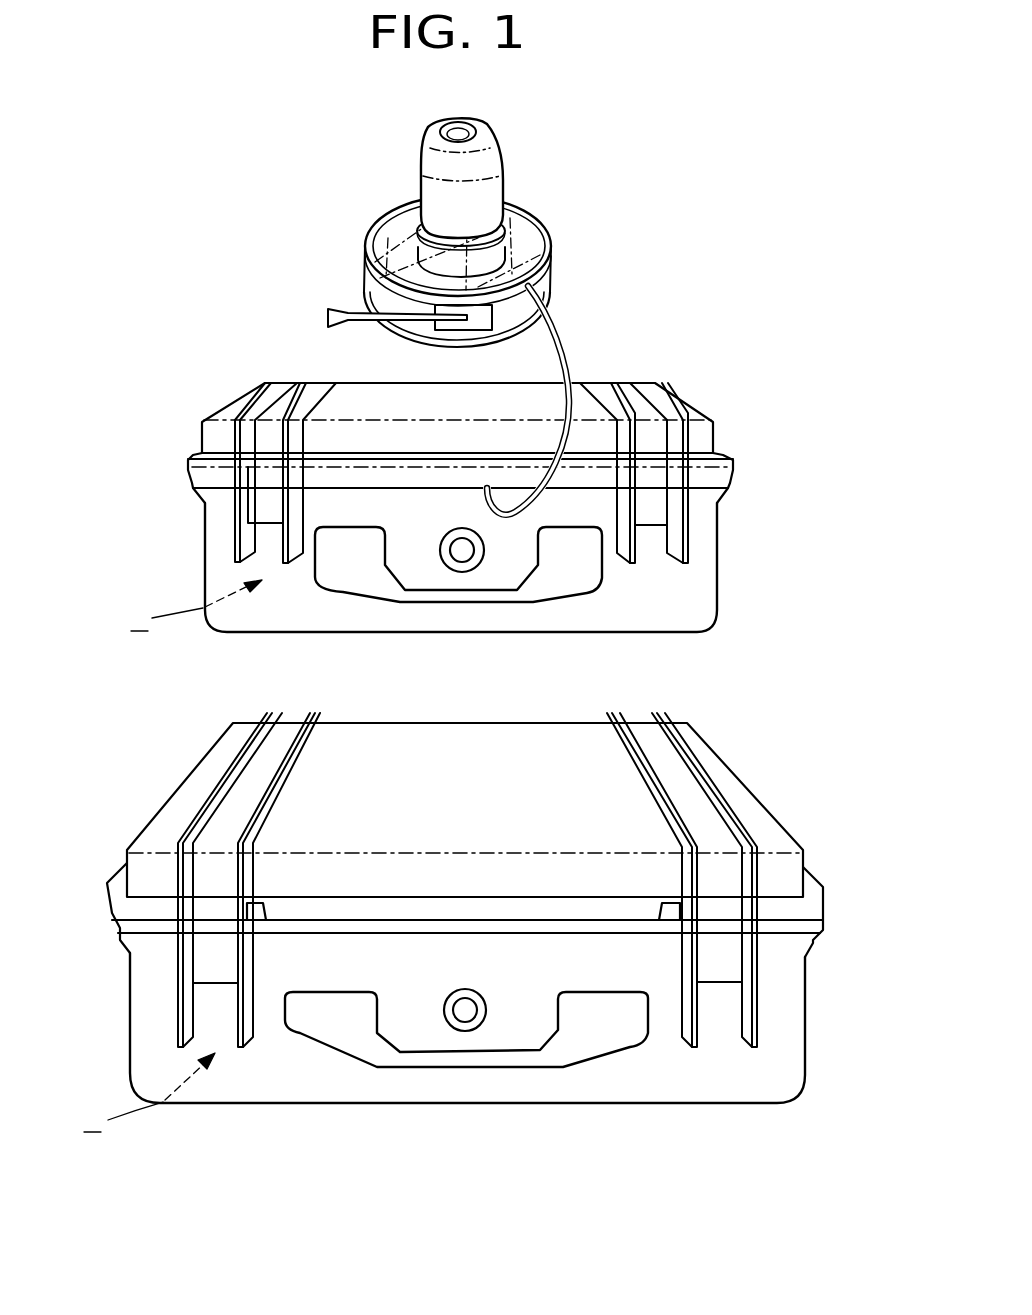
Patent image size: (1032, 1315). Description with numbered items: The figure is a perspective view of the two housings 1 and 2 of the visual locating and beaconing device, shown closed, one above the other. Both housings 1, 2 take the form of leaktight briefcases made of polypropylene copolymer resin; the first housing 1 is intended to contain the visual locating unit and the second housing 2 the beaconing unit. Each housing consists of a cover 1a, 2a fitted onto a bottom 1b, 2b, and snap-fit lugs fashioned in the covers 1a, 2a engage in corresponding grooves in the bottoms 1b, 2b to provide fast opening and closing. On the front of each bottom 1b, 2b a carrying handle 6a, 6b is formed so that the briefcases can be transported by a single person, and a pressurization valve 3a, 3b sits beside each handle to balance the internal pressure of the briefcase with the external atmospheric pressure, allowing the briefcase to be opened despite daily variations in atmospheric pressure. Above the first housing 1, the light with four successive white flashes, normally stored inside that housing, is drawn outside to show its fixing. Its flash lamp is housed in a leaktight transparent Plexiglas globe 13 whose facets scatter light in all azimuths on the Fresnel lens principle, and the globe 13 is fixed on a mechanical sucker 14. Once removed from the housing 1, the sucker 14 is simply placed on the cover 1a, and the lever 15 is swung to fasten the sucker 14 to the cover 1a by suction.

The housing 1 is at (454, 537).
The cover 1a is at (240, 410).
The bottom 1b is at (396, 579).
The housing 2 is at (466, 936).
The cover 2a is at (192, 790).
The bottom 2b is at (419, 1025).
The pressurization valve 3a is at (457, 562).
The pressurization valve 3b is at (465, 1022).
The carrying handle 6a is at (352, 560).
The carrying handle 6b is at (330, 1025).
The transparent Plexiglas globe 13 is at (480, 188).
The mechanical sucker 14 is at (540, 285).
The lever 15 is at (358, 308).